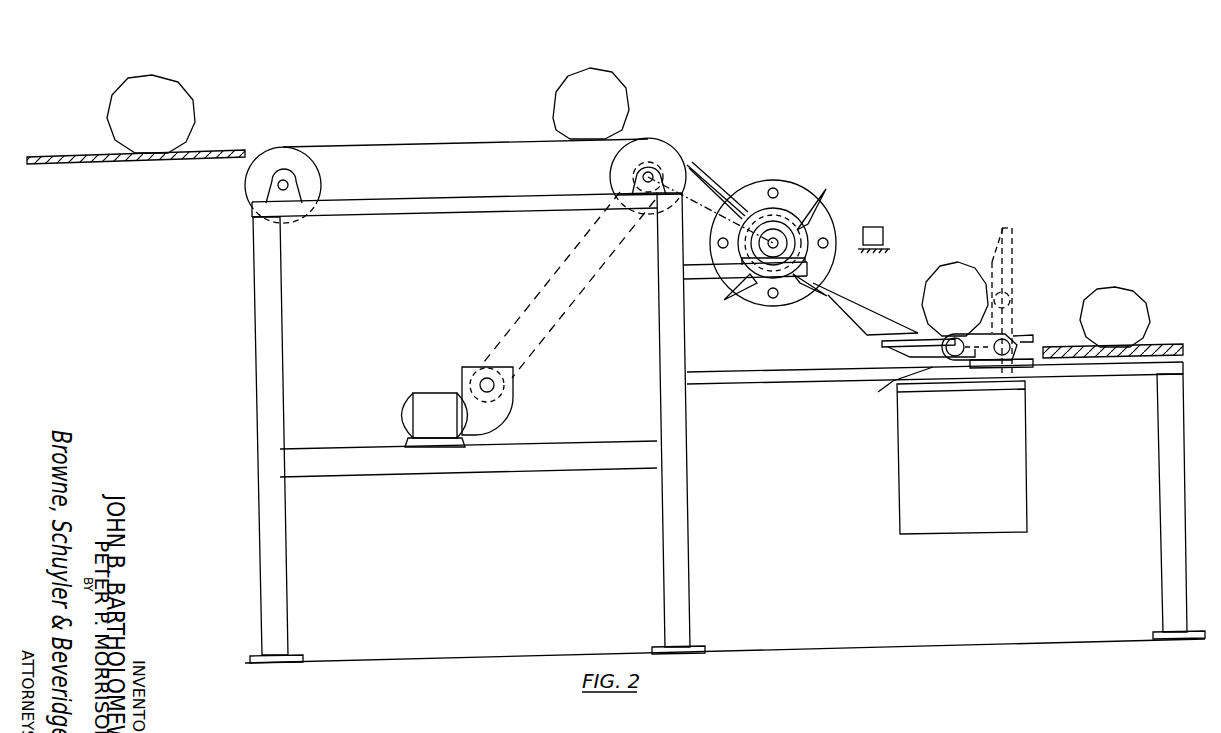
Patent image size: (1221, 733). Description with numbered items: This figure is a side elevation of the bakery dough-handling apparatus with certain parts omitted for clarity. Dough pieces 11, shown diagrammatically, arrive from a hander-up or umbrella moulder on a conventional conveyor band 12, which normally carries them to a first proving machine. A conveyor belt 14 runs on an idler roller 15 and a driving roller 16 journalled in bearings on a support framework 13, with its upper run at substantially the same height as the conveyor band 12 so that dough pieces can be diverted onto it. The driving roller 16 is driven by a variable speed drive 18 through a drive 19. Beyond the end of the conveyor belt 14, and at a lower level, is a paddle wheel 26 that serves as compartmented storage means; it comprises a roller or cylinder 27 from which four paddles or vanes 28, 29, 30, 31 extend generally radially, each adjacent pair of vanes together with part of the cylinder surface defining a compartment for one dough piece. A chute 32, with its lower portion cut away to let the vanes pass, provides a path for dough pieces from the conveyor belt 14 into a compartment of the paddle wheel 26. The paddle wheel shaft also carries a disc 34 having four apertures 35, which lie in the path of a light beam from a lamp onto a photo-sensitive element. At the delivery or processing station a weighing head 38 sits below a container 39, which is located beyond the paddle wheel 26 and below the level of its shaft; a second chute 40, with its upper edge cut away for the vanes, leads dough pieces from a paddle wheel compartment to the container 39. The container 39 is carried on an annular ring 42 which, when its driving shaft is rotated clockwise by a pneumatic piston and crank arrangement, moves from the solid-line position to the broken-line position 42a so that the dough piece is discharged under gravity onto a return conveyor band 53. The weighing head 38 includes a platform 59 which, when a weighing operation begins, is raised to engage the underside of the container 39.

The dough pieces 11 is at (183, 113).
The conveyor band 12 is at (56, 165).
The support framework 13 is at (282, 312).
The conveyor belt 14 is at (413, 148).
The idler roller 15 is at (312, 178).
The driving roller 16 is at (618, 170).
The variable speed drive 18 is at (512, 412).
The drive 19 is at (588, 283).
The paddle wheel 26 is at (800, 237).
The roller or cylinder 27 is at (792, 208).
The paddle or vane 28 is at (815, 195).
The paddle or vane 29 is at (727, 194).
The paddle or vane 30 is at (730, 298).
The paddle or vane 31 is at (808, 290).
The chute 32 is at (698, 178).
The disc 34 is at (823, 268).
The apertures 35 is at (774, 188).
The weighing head 38 is at (1010, 472).
The container 39 is at (930, 333).
The second chute 40 is at (870, 313).
The annular ring 42 is at (888, 348).
The annular ring in displaced position 42a is at (1000, 237).
The return conveyor band 53 is at (1165, 344).
The platform 59 is at (898, 389).